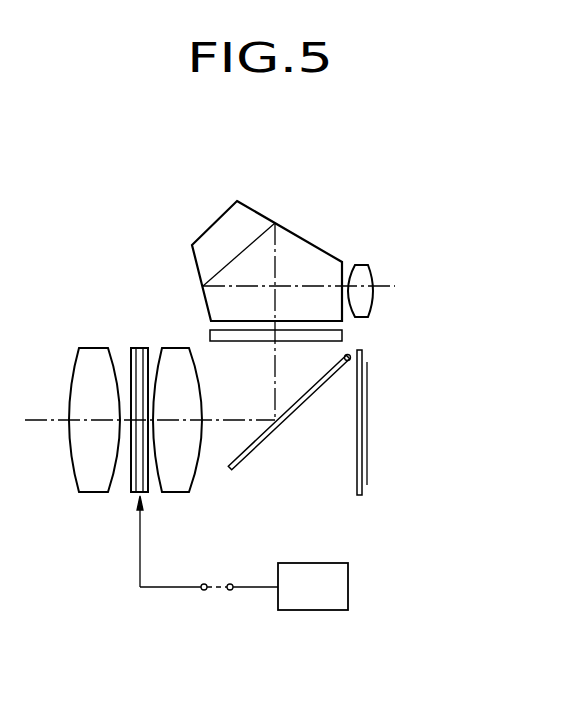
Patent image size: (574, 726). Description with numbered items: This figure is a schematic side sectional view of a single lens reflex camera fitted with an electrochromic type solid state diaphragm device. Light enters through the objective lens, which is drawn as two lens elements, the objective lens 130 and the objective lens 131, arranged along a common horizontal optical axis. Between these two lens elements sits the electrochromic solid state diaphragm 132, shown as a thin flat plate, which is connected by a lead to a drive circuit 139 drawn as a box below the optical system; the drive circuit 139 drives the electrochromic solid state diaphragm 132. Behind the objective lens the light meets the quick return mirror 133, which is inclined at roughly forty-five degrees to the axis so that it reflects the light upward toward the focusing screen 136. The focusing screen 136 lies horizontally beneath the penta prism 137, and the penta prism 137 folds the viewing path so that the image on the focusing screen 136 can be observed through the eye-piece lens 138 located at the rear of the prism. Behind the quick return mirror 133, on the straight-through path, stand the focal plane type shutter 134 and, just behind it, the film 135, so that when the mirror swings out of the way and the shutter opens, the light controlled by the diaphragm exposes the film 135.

The objective lens 130 is at (90, 482).
The objective lens 131 is at (177, 485).
The electrochromic solid state diaphragm 132 is at (137, 345).
The quick return mirror 133 is at (257, 440).
The focal plane type shutter 134 is at (358, 437).
The film 135 is at (367, 448).
The focusing screen 136 is at (340, 338).
The penta prism 137 is at (297, 245).
The eye-piece lens 138 is at (365, 280).
The drive circuit 139 is at (319, 597).